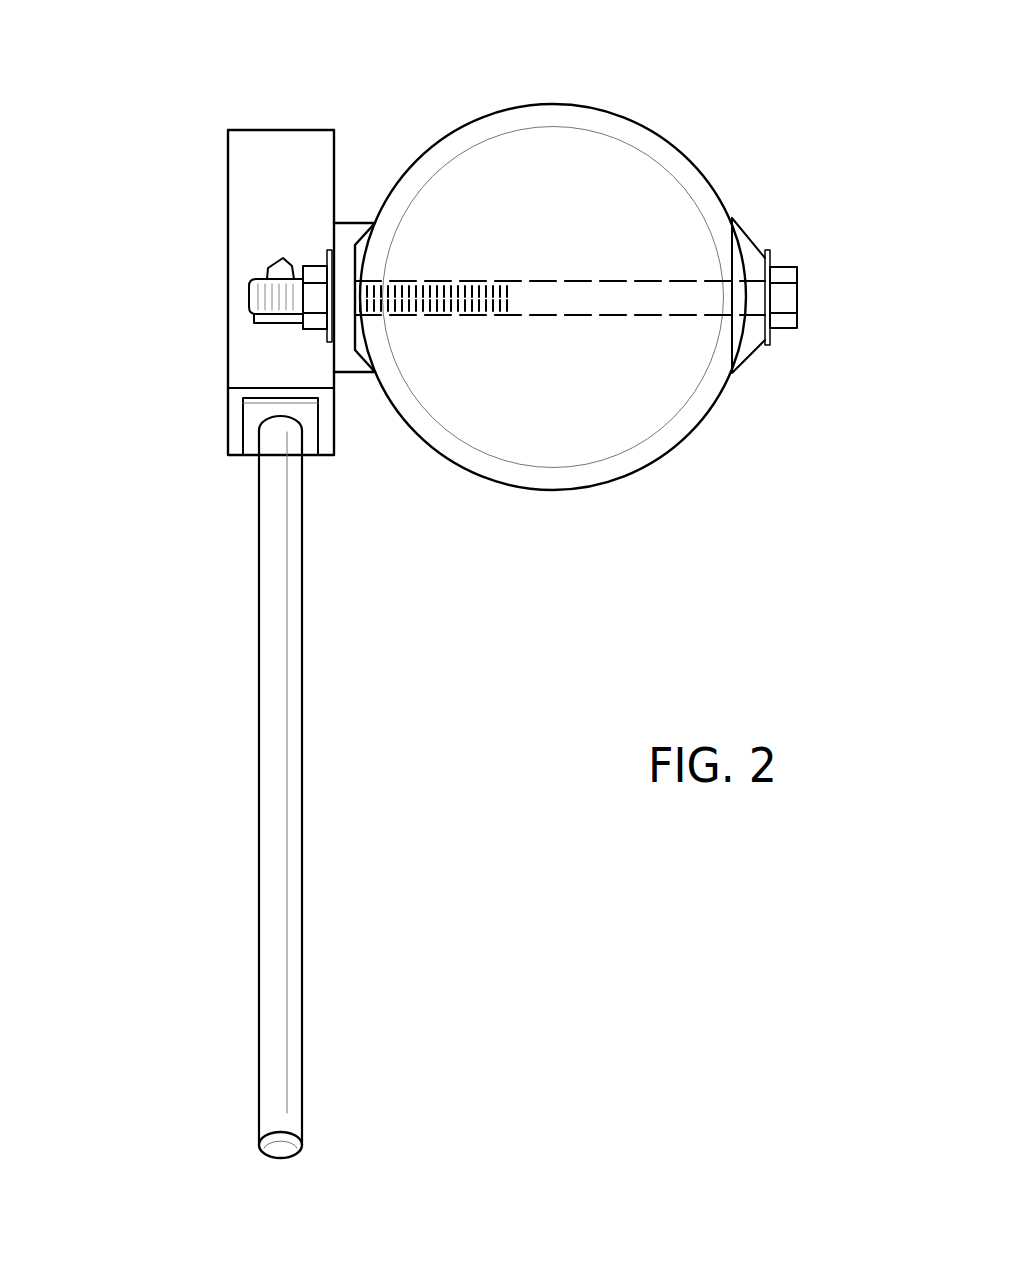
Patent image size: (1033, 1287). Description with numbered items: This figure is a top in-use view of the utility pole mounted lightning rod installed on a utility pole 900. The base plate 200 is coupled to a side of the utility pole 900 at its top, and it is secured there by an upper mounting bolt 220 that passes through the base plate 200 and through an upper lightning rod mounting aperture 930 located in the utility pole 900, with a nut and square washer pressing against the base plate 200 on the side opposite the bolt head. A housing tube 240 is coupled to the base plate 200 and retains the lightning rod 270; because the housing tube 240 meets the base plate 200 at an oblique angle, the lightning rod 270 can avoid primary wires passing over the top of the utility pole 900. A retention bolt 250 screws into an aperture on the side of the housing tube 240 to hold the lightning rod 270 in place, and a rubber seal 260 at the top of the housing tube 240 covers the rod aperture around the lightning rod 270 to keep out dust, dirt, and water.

The base plate 200 is at (349, 237).
The upper mounting bolt 220 is at (596, 302).
The housing tube 240 is at (275, 140).
The retention bolt 250 is at (276, 266).
The seal 260 is at (313, 440).
The lightning rod 270 is at (297, 1010).
The utility pole 900 is at (565, 488).
The upper lightning rod mounting aperture 930 is at (629, 280).